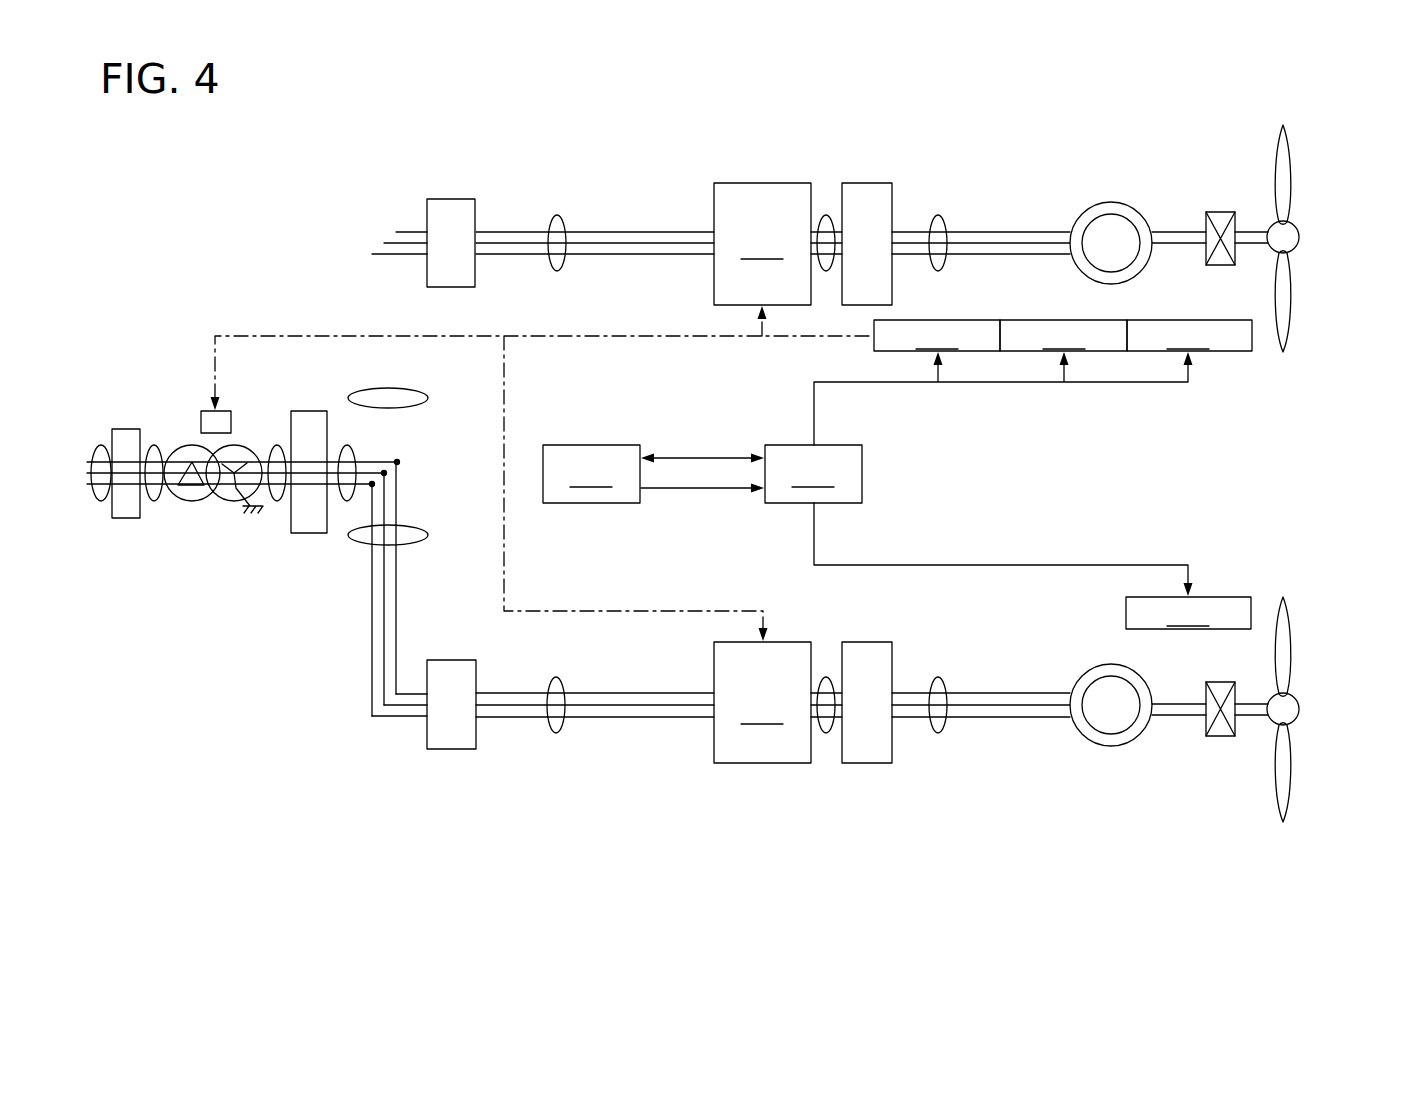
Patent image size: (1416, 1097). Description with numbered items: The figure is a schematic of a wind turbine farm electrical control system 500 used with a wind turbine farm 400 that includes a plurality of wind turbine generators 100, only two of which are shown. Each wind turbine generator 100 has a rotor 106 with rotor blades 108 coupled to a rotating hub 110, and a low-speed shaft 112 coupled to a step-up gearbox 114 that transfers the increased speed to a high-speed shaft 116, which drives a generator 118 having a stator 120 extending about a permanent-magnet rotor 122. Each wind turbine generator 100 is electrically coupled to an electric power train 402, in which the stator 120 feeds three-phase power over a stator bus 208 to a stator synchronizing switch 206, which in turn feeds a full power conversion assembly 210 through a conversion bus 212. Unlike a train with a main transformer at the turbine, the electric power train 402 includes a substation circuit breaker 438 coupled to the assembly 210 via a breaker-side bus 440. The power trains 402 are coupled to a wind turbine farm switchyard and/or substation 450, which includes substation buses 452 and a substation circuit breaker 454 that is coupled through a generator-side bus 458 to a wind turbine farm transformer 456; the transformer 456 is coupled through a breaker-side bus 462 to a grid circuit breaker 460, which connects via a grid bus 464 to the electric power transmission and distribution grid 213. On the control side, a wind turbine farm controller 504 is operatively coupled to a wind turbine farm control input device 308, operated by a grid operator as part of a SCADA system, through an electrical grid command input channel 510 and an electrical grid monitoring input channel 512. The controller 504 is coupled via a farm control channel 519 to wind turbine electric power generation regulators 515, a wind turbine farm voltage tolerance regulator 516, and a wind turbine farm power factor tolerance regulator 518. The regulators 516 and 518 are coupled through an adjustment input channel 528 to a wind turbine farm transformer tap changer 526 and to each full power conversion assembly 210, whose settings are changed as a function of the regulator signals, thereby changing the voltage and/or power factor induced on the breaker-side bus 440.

The wind turbine generator 100 is at (1278, 475).
The rotor 106 is at (1335, 474).
The rotor blades 108 is at (1292, 167).
The rotating hub 110 is at (1298, 228).
The low-speed shaft 112 is at (1250, 231).
The step-up gearbox 114 is at (1220, 211).
The high-speed shaft 116 is at (1178, 231).
The generator 118 is at (1105, 475).
The stator 120 is at (1123, 207).
The rotor 122 is at (1105, 226).
The stator synchronizing switch 206 is at (866, 182).
The stator bus 208 is at (938, 214).
The full power conversion assembly 210 is at (762, 473).
The conversion bus 212 is at (826, 214).
The electric power transmission and distribution grid 213 is at (90, 395).
The wind turbine farm control input device 308 is at (591, 474).
The wind turbine farm 400 is at (296, 158).
The electric power train 402 is at (619, 149).
The substation circuit breaker 438 is at (450, 198).
The breaker-side bus 440 is at (557, 214).
The wind turbine farm switchyard and/or substation 450 is at (251, 516).
The substation buses 452 is at (347, 445).
The substation circuit breaker 454 is at (315, 502).
The wind turbine farm transformer 456 is at (237, 503).
The generator-side bus 458 is at (277, 504).
The grid circuit breaker 460 is at (125, 519).
The breaker-side bus 462 is at (153, 502).
The grid bus 464 is at (100, 445).
The wind turbine farm electrical control system 500 is at (732, 473).
The wind turbine farm controller 504 is at (813, 474).
The electrical grid command input channel 510 is at (663, 489).
The electrical grid monitoring input channel 512 is at (732, 457).
The wind turbine electric power generation regulator 515 is at (1189, 474).
The wind turbine farm voltage tolerance regulator 516 is at (937, 335).
The wind turbine farm power factor tolerance regulator 518 is at (1063, 335).
The farm control channel 519 is at (814, 393).
The wind turbine farm transformer tap changer 526 is at (201, 421).
The adjustment input channel 528 is at (615, 340).